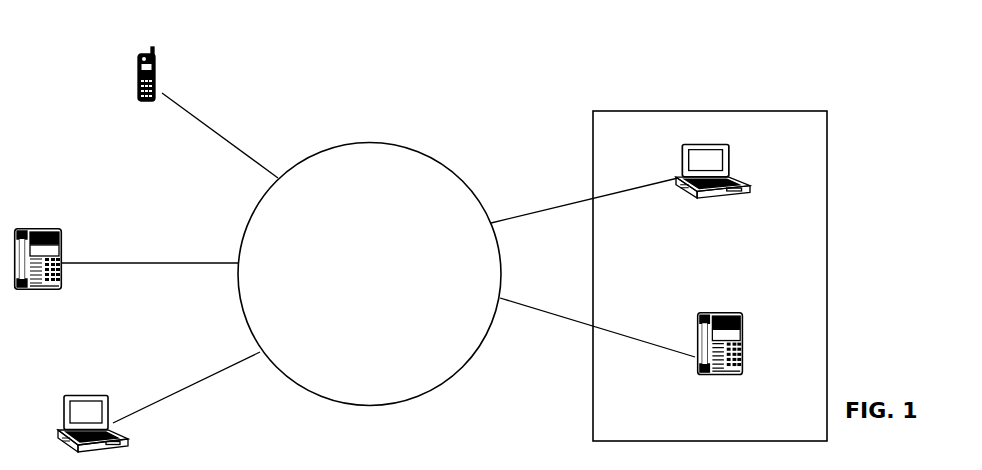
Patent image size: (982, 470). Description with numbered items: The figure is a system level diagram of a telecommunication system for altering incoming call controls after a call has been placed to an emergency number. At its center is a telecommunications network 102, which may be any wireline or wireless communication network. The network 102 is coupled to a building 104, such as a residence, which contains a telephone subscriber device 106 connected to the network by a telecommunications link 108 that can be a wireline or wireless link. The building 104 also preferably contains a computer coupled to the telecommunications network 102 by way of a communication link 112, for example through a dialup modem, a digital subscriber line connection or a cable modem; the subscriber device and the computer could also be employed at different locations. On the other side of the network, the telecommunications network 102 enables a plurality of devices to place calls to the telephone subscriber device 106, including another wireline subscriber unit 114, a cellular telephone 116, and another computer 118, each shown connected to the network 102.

The telecommunications network 102 is at (415, 150).
The building 104 is at (695, 111).
The telephone subscriber device 106 is at (725, 312).
The telecommunications link 108 is at (730, 178).
The communication link 112 is at (512, 217).
The wireline subscriber unit 114 is at (62, 240).
The cellular telephone 116 is at (156, 70).
The computer 118 is at (110, 408).